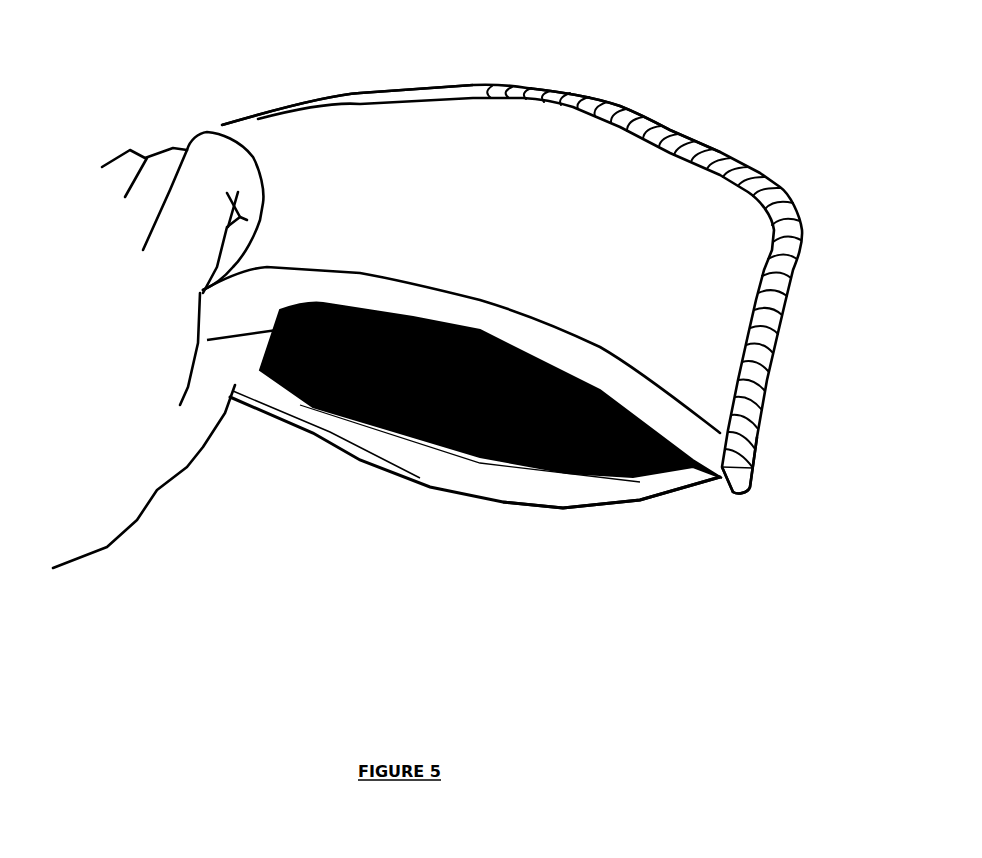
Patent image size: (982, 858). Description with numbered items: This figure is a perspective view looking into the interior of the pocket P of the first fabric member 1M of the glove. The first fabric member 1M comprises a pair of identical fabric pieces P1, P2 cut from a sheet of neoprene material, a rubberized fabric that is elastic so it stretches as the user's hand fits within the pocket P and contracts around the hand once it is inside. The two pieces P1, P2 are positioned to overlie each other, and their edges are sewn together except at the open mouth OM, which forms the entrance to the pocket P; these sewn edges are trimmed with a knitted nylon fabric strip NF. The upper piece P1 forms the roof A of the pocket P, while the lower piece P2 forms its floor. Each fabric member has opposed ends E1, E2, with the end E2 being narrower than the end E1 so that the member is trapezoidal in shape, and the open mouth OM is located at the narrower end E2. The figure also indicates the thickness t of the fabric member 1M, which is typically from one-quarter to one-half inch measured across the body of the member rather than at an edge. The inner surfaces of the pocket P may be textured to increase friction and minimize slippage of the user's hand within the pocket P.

The knitted nylon fabric strip NF is at (430, 92).
The fabric piece P1 is at (508, 148).
The end E1 is at (648, 115).
The roof A is at (672, 205).
The first fabric member 1M is at (767, 438).
The thickness t is at (718, 503).
The pocket P is at (350, 407).
The fabric piece P2 is at (395, 424).
The open mouth OM is at (415, 450).
The end E2 is at (620, 493).